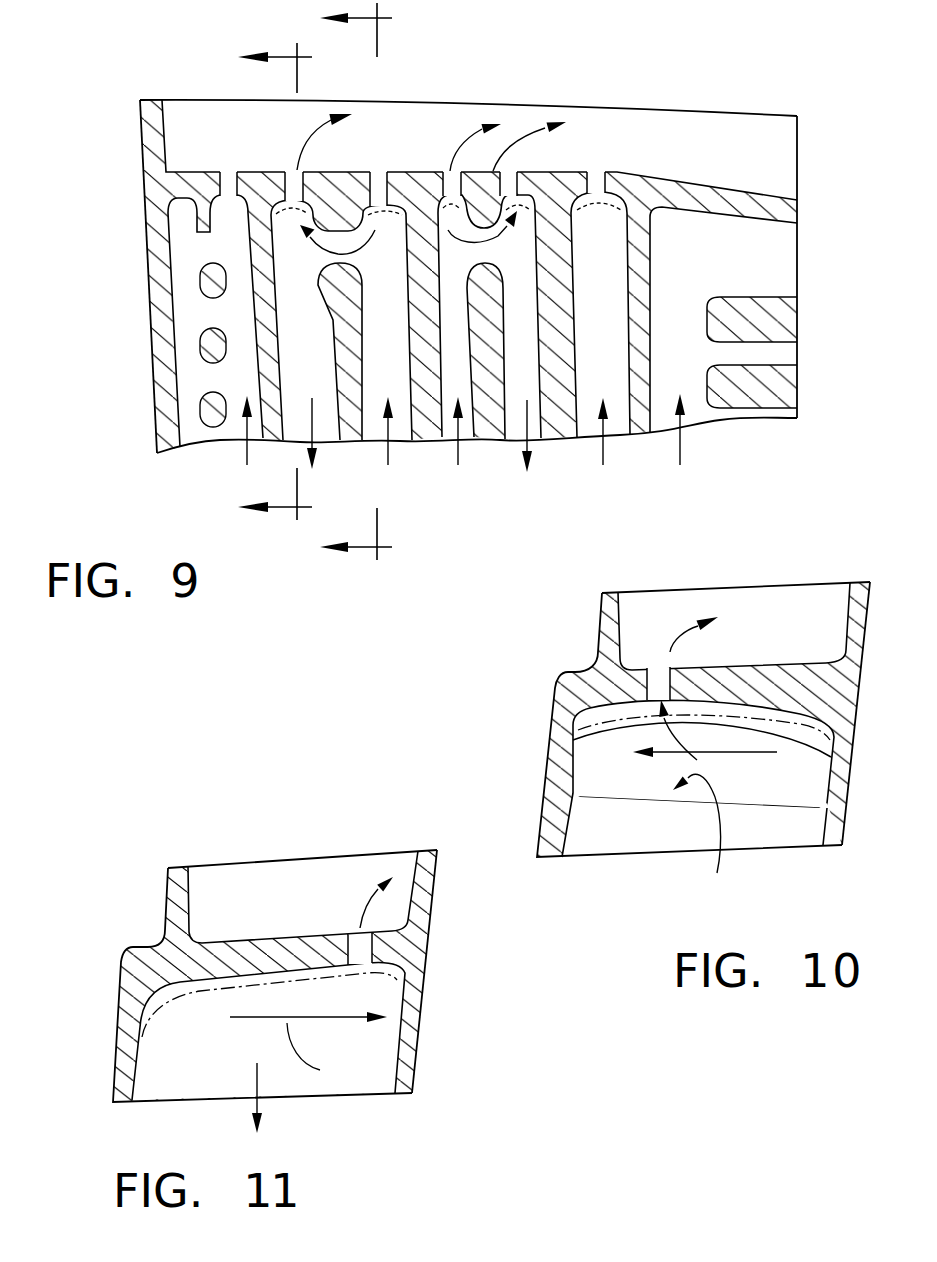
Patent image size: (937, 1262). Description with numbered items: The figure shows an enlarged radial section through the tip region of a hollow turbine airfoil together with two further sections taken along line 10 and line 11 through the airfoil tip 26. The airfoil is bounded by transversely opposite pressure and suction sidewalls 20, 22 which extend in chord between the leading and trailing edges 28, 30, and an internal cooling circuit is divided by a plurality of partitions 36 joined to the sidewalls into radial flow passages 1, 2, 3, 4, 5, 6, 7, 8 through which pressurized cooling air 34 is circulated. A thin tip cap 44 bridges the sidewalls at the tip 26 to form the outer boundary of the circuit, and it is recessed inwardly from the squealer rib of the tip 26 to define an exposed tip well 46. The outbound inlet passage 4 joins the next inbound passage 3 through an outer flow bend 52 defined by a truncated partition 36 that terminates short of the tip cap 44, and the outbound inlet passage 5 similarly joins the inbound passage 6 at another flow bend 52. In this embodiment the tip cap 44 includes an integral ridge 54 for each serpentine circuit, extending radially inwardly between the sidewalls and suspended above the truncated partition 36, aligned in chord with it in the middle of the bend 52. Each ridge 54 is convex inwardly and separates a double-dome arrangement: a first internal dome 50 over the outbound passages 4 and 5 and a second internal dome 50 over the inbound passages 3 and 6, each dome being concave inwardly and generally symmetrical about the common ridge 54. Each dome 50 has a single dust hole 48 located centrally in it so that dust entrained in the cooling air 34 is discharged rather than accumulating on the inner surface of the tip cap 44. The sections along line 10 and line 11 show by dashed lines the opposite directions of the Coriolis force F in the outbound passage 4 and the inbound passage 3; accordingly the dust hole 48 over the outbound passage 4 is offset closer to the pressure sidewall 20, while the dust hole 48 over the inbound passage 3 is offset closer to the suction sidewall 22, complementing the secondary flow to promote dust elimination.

In FIG. 9, the first radial flow passage 1 is at (177, 330).
In FIG. 9, the second radial flow passage 2 is at (237, 380).
In FIG. 9, the inbound flow passage 3 is at (292, 355).
In FIG. 11, the inbound flow passage 3 is at (217, 1075).
In FIG. 9, the outbound inlet passage 4 is at (372, 335).
In FIG. 10, the outbound inlet passage 4 is at (599, 783).
In FIG. 9, the outbound inlet passage 5 is at (447, 353).
In FIG. 9, the inbound flow passage 6 is at (512, 335).
In FIG. 9, the seventh radial flow passage 7 is at (592, 327).
In FIG. 9, the eighth radial flow passage 8 is at (672, 327).
In FIG. 9, the section line 10- 10 is at (329, 284).
In FIG. 9, the section line 11- 11 is at (250, 282).
In FIG. 10, the pressure sidewall 20 is at (552, 698).
In FIG. 11, the pressure sidewall 20 is at (124, 1022).
In FIG. 10, the suction sidewall 22 is at (849, 720).
In FIG. 11, the suction sidewall 22 is at (425, 1040).
In FIG. 9, the airfoil tip 26 is at (665, 102).
In FIG. 10, the airfoil tip 26 is at (865, 581).
In FIG. 11, the airfoil tip 26 is at (428, 848).
In FIG. 9, the leading edge 28 is at (152, 292).
In FIG. 9, the trailing edge 30 is at (800, 268).
In FIG. 9, the cooling air 34 is at (452, 171).
In FIG. 10, the cooling air 34 is at (730, 848).
In FIG. 11, the cooling air 34 is at (250, 1100).
In FIG. 9, the partition 36 is at (350, 440).
In FIG. 10, the partition 36 is at (590, 842).
In FIG. 11, the partition 36 is at (327, 1097).
In FIG. 9, the tip cap 44 is at (515, 170).
In FIG. 10, the tip cap 44 is at (750, 668).
In FIG. 11, the tip cap 44 is at (277, 943).
In FIG. 9, the tip well 46 is at (676, 160).
In FIG. 10, the tip well 46 is at (736, 619).
In FIG. 11, the tip well 46 is at (204, 897).
In FIG. 9, the dust hole 48 is at (295, 170).
In FIG. 10, the dust hole 48 is at (658, 697).
In FIG. 11, the dust hole 48 is at (354, 938).
In FIG. 9, the internal dome 50 is at (311, 212).
In FIG. 10, the internal dome 50 is at (752, 713).
In FIG. 11, the internal dome 50 is at (218, 982).
In FIG. 9, the outer flow bend 52 is at (522, 237).
In FIG. 9, the ridge 54 is at (345, 253).